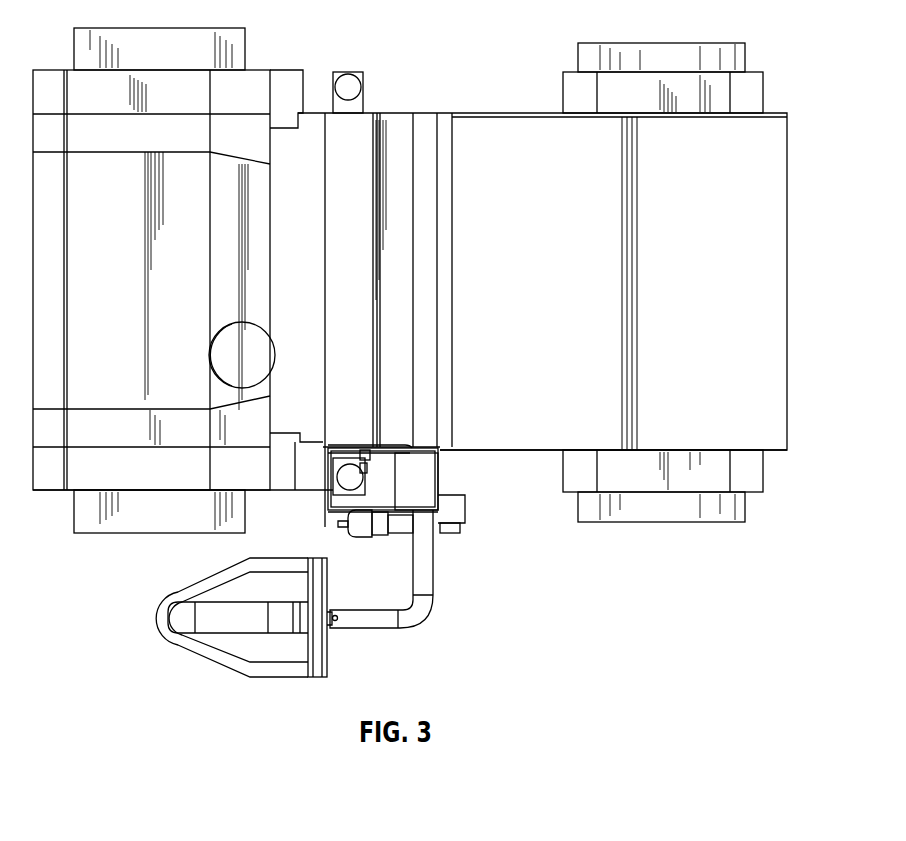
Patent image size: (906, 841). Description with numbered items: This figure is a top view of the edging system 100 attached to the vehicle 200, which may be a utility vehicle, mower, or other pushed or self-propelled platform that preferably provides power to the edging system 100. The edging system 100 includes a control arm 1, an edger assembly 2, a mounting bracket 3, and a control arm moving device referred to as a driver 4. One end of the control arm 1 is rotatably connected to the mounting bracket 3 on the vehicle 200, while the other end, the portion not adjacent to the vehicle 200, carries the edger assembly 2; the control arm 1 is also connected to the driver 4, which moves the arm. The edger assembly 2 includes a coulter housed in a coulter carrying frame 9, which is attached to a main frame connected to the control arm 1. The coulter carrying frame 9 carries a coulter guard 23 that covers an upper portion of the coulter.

The vehicle 200 is at (483, 113).
The edging system 100 is at (108, 638).
The control arm 1 is at (420, 617).
The edger assembly 2 is at (213, 665).
The mounting bracket 3 is at (440, 468).
The driver 4 is at (353, 537).
The coulter carrying frame 9 is at (307, 625).
The coulter guard 23 is at (172, 617).